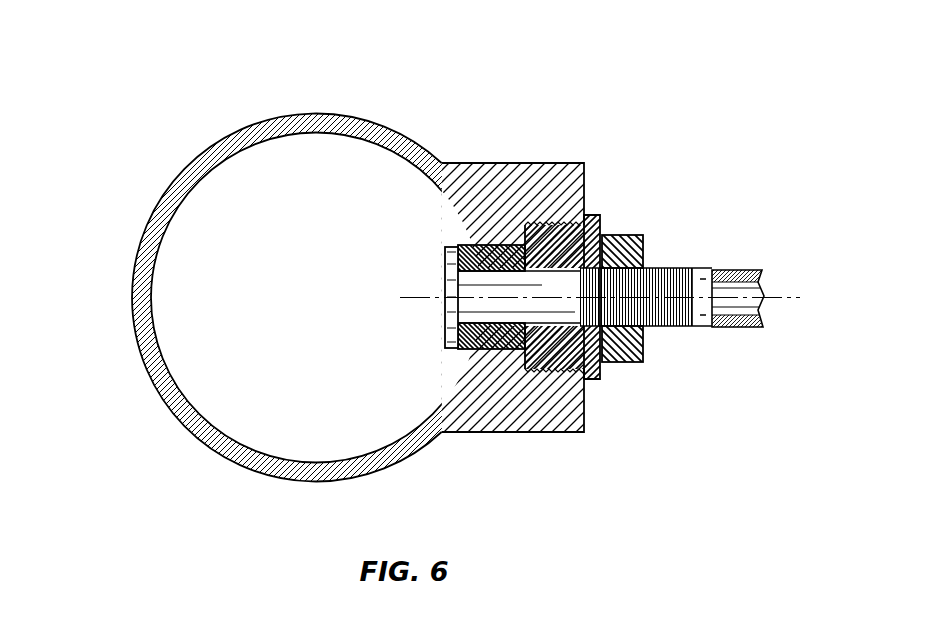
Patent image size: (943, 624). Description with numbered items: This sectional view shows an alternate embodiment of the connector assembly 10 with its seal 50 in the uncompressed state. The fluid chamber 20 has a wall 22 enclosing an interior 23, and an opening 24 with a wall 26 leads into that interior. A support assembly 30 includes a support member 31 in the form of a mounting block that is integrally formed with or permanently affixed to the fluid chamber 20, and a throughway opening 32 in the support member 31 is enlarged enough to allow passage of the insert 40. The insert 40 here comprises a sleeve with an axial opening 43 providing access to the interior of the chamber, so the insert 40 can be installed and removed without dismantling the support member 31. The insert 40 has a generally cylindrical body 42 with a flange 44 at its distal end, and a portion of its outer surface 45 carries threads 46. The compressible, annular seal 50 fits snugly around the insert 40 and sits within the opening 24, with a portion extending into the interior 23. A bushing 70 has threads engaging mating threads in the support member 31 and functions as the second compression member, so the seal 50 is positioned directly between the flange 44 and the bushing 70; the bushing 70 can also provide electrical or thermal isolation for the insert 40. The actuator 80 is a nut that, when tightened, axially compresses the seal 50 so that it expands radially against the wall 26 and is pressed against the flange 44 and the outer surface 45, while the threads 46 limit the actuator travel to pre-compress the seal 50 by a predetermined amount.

The connector assembly 10 is at (443, 269).
The fluid chamber 20 is at (270, 322).
The wall 22 is at (167, 193).
The interior 23 is at (218, 295).
The opening 24 is at (583, 432).
The wall of the opening 26 is at (468, 349).
The support assembly 30 is at (426, 262).
The support member 31 is at (426, 303).
The throughway opening 32 is at (471, 262).
The insert 40 is at (695, 327).
The body 42 is at (680, 326).
The axial opening 43 is at (737, 292).
The flange 44 is at (445, 261).
The outer surface 45 is at (585, 382).
The threads 46 is at (667, 332).
The seal 50 is at (472, 244).
The bushing 70 is at (597, 221).
The actuator 80 is at (628, 237).